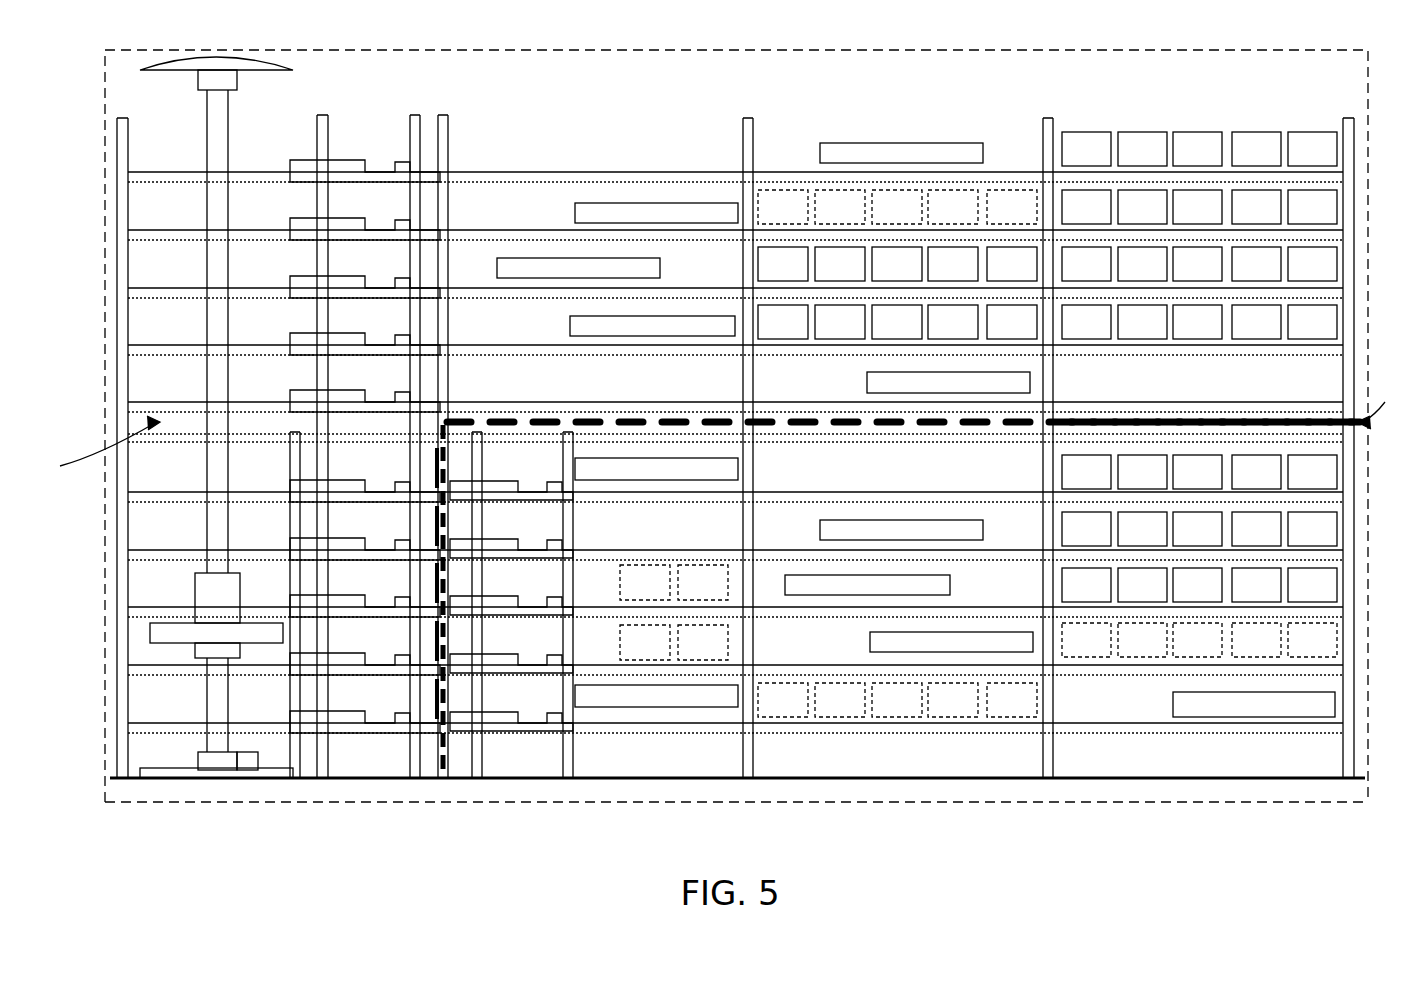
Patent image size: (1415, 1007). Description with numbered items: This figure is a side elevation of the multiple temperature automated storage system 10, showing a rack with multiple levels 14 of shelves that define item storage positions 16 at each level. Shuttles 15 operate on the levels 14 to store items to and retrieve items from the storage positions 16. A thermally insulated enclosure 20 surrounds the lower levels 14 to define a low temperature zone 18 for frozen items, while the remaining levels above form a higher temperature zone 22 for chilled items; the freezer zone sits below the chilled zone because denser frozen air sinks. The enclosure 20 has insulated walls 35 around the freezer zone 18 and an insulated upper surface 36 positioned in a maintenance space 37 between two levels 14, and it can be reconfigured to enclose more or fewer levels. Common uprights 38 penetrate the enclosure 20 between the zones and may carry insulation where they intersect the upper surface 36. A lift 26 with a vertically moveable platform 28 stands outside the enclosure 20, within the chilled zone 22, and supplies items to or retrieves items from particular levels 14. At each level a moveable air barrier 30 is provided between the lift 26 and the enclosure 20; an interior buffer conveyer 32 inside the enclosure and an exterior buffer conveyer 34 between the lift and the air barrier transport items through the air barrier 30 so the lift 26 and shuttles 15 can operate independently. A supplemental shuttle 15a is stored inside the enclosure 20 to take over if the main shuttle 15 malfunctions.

The multiple temperature automated storage system 10 is at (719, 450).
The levels 14 is at (1335, 178).
The shuttle 15 is at (575, 206).
The supplemental shuttle 15a is at (1182, 702).
The item storage positions 16 is at (978, 424).
The low temperature zone 18 is at (1180, 800).
The thermally insulated enclosure 20 is at (539, 404).
The higher temperature zone 22 is at (395, 48).
The lift 26 is at (215, 305).
The vertically moveable platform 28 is at (170, 640).
The moveable air barrier 30 is at (437, 464).
The interior buffer conveyer 32 is at (497, 487).
The exterior buffer conveyer 34 is at (345, 162).
The insulated walls 35 is at (443, 785).
The insulated upper surface 36 is at (1085, 420).
The maintenance space 37 is at (719, 431).
The common uprights 38 is at (124, 116).